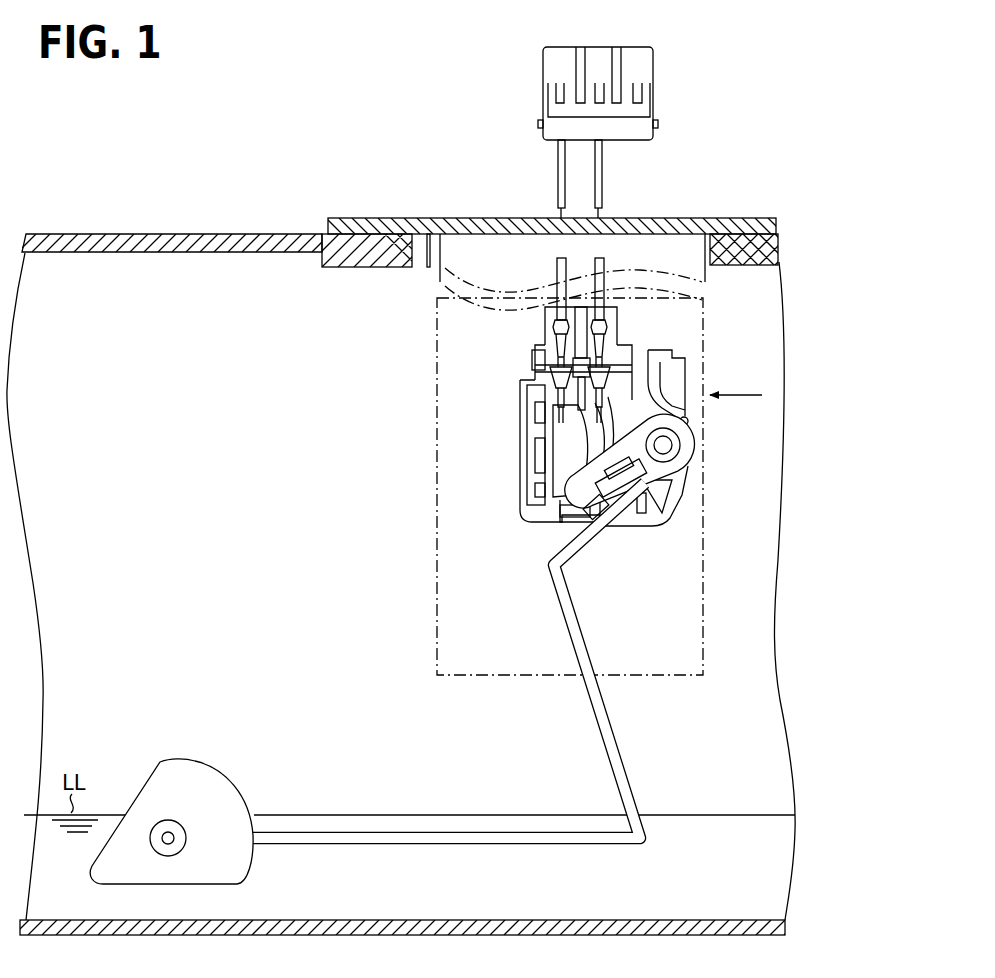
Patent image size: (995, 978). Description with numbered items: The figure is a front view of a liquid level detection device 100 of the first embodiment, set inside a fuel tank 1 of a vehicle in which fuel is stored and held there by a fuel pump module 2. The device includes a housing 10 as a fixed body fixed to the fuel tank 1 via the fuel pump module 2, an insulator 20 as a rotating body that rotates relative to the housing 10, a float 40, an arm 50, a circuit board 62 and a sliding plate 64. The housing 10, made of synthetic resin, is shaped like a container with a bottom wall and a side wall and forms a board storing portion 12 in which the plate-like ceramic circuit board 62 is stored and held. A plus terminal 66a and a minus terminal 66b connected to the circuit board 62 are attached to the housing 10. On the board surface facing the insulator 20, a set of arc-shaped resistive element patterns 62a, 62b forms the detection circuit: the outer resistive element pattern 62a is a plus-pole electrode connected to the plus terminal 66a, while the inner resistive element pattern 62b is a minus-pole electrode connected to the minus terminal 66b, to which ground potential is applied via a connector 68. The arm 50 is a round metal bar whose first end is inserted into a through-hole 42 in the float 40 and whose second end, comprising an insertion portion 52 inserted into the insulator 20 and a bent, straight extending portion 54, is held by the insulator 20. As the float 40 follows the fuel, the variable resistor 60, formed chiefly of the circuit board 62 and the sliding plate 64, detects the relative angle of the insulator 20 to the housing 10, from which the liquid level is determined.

The fuel tank 1 is at (233, 233).
The fuel pump module 2 is at (706, 628).
The housing 10 is at (662, 510).
The board storing portion 12 is at (545, 467).
The insulator 20 is at (688, 477).
The float 40 is at (186, 760).
The through-hole 42 is at (165, 836).
The arm 50 is at (618, 743).
The insertion portion 52 is at (680, 445).
The extending portion 54 is at (582, 528).
The variable resistor 60 is at (530, 457).
The circuit board 62 is at (532, 394).
The resistive element pattern 62a is at (560, 428).
The resistive element pattern 62b is at (575, 462).
The sliding plate 64 is at (572, 534).
The plus terminal 66a is at (560, 372).
The minus terminal 66b is at (600, 372).
The connector 68 is at (655, 72).
The liquid level detection device 100 is at (696, 354).